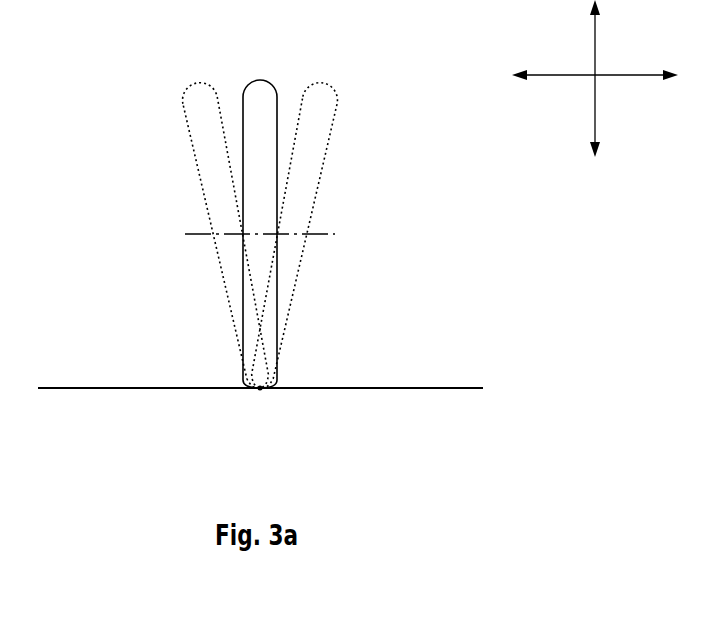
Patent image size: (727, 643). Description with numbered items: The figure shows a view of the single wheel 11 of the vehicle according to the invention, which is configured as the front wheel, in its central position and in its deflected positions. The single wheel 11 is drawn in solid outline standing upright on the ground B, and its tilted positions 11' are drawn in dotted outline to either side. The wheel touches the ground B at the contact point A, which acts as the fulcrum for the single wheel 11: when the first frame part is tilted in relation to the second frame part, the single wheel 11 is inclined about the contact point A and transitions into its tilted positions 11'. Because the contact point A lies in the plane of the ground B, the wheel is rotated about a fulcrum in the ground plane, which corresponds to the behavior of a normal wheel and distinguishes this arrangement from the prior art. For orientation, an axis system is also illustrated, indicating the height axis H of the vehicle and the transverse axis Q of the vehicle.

The single wheel 11 is at (263, 195).
The tilted positions of the single wheel 11' is at (262, 197).
The contact point A is at (272, 402).
The ground B is at (107, 373).
The height axis H is at (609, 78).
The transverse axis Q is at (591, 60).